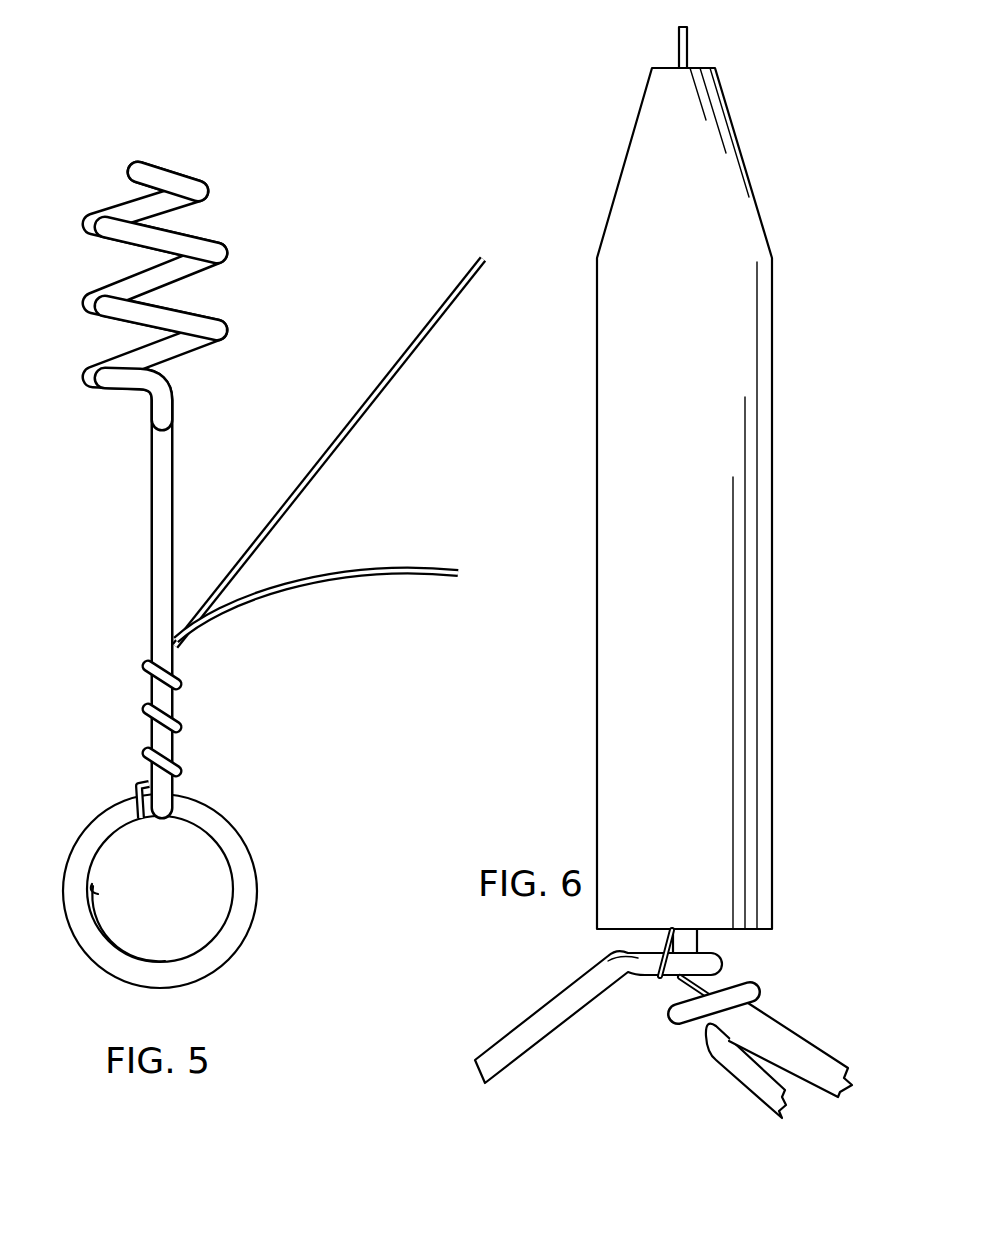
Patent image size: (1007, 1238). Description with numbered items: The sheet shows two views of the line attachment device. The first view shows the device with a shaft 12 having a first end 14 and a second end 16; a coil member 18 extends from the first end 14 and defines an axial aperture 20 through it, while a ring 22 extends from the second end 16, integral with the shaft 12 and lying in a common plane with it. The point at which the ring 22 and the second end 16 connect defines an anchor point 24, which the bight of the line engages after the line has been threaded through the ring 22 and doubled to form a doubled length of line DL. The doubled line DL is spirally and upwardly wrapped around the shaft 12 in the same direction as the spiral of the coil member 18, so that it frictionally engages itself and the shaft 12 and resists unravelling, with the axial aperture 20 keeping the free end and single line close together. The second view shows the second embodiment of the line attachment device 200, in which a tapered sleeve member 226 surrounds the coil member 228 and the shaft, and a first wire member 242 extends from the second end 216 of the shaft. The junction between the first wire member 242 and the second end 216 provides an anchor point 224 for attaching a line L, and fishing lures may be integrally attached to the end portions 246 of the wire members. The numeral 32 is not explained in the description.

In FIG. 5, the shaft 12 is at (239, 521).
In FIG. 5, the first end 14 is at (176, 420).
In FIG. 5, the second end 16 is at (183, 750).
In FIG. 5, the coil member 18 is at (222, 431).
In FIG. 5, the axial aperture 20 is at (187, 167).
In FIG. 5, the ring 22 is at (259, 853).
In FIG. 5, the anchor point 24 is at (155, 816).
In FIG. 5, the doubled length of line DL is at (332, 464).
In FIG. 6, the line L is at (688, 42).
In FIG. 6, the line attachment device 200 is at (758, 510).
In FIG. 6, the second end 216 is at (700, 942).
In FIG. 6, the anchor point 224 is at (722, 972).
In FIG. 6, the tapered sleeve member 226 is at (772, 596).
In FIG. 6, the coil member 228 is at (747, 157).
In FIG. 6, the first wire member 242 is at (615, 1041).
In FIG. 6, the end portions 246 is at (846, 1068).
In FIG. 6, the lower body portion 32 is at (775, 878).